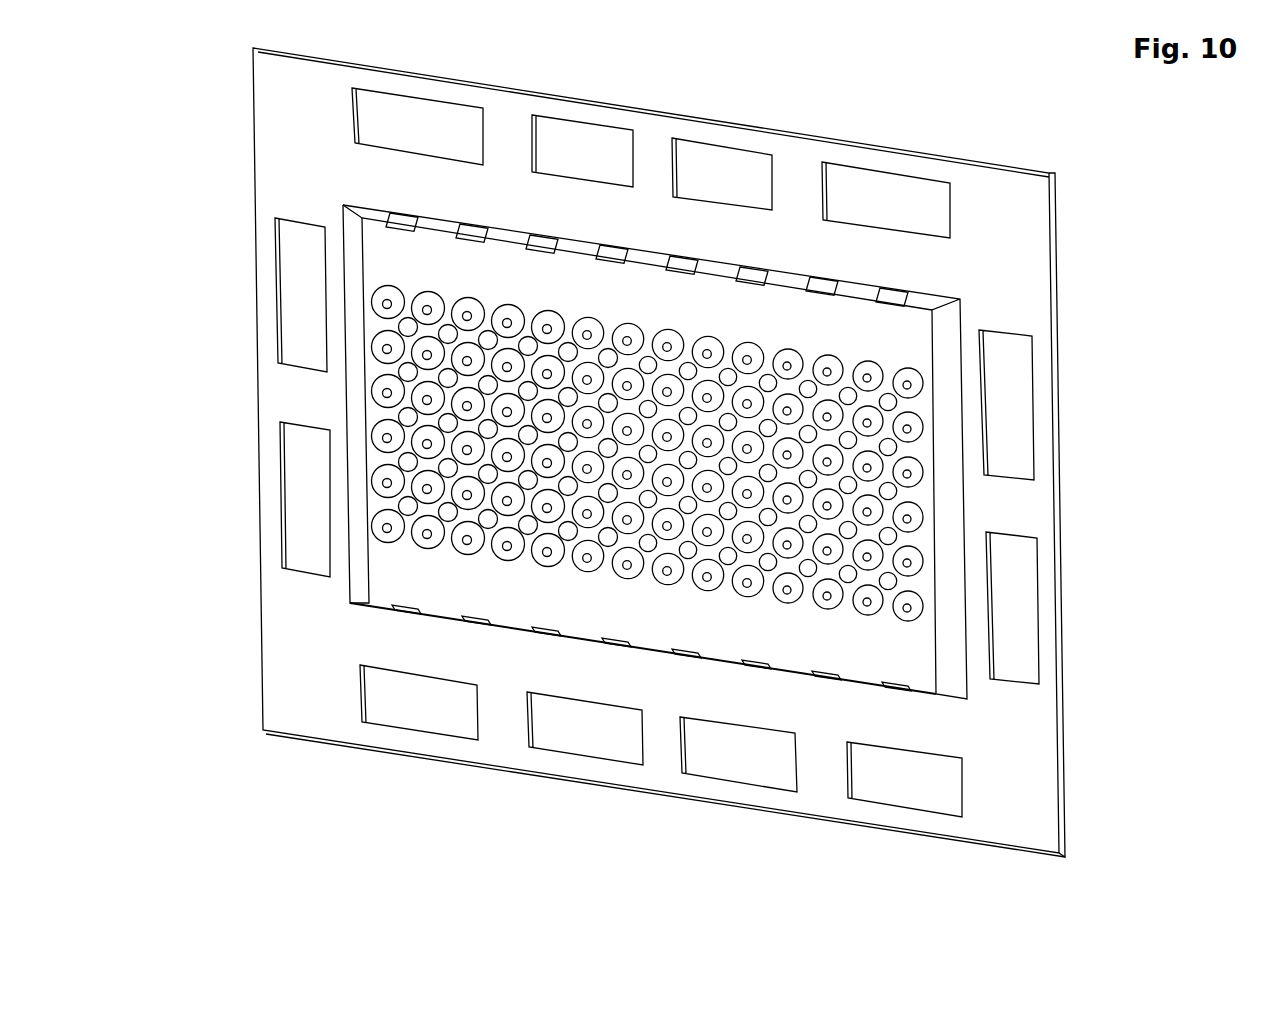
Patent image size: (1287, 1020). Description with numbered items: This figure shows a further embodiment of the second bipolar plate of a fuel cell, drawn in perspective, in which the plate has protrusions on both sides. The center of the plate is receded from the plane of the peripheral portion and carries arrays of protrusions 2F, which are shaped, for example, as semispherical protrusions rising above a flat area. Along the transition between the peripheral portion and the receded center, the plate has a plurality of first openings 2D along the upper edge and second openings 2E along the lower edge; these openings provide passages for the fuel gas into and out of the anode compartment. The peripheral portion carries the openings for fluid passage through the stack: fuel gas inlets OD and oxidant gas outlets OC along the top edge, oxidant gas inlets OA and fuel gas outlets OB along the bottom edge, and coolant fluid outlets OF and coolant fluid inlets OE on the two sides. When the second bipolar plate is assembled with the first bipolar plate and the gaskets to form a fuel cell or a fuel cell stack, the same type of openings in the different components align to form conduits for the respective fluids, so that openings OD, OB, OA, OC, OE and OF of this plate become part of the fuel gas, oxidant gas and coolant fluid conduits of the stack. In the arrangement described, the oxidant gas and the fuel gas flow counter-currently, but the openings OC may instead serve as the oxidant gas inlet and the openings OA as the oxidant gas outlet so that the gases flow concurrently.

The oxidant gas inlets OA is at (427, 702).
The fuel gas outlets OB is at (722, 753).
The oxidant gas outlet OC is at (412, 127).
The fuel gas inlets OD is at (718, 182).
The coolant fluid inlets OE is at (298, 498).
The coolant fluid outlets OF is at (302, 292).
The first openings 2D is at (895, 297).
The second openings 2E is at (902, 688).
The protrusions 2F is at (887, 451).